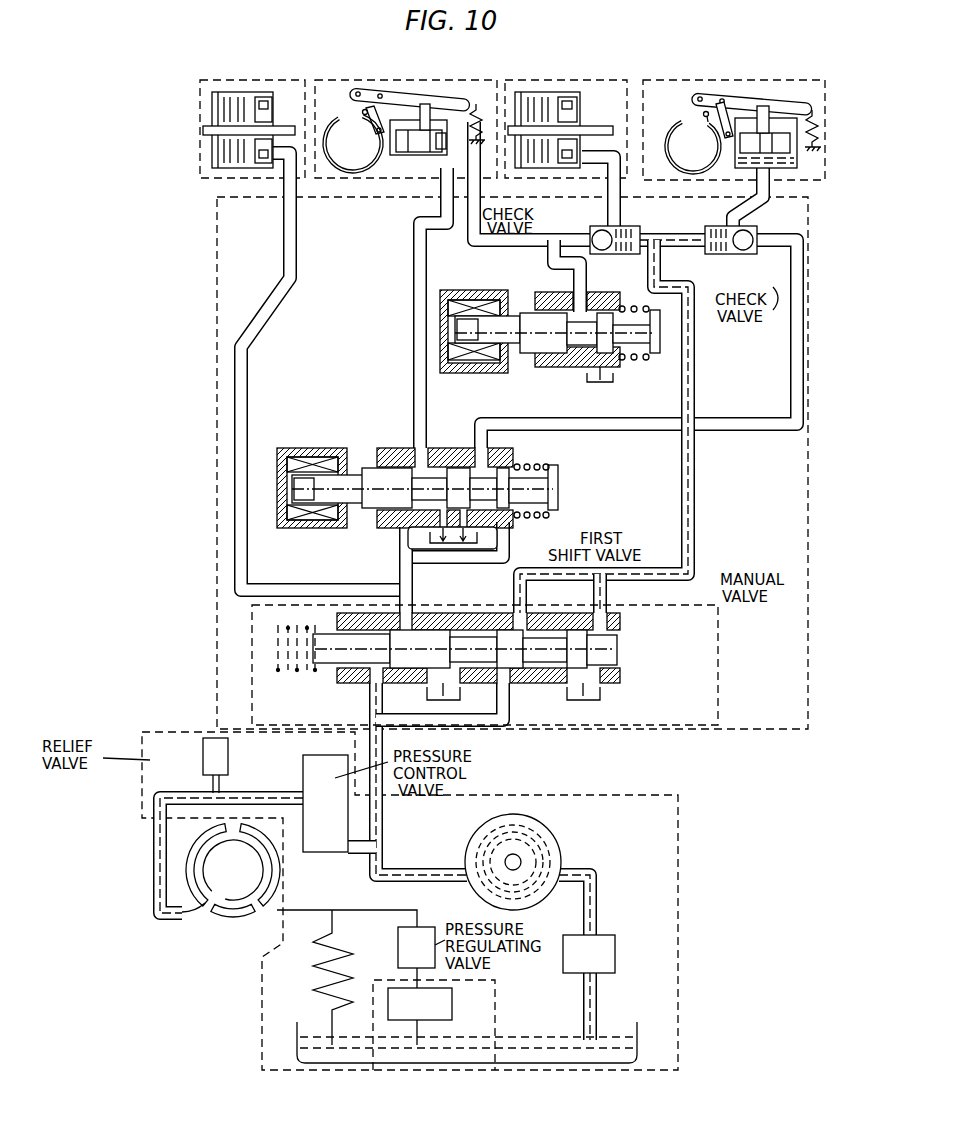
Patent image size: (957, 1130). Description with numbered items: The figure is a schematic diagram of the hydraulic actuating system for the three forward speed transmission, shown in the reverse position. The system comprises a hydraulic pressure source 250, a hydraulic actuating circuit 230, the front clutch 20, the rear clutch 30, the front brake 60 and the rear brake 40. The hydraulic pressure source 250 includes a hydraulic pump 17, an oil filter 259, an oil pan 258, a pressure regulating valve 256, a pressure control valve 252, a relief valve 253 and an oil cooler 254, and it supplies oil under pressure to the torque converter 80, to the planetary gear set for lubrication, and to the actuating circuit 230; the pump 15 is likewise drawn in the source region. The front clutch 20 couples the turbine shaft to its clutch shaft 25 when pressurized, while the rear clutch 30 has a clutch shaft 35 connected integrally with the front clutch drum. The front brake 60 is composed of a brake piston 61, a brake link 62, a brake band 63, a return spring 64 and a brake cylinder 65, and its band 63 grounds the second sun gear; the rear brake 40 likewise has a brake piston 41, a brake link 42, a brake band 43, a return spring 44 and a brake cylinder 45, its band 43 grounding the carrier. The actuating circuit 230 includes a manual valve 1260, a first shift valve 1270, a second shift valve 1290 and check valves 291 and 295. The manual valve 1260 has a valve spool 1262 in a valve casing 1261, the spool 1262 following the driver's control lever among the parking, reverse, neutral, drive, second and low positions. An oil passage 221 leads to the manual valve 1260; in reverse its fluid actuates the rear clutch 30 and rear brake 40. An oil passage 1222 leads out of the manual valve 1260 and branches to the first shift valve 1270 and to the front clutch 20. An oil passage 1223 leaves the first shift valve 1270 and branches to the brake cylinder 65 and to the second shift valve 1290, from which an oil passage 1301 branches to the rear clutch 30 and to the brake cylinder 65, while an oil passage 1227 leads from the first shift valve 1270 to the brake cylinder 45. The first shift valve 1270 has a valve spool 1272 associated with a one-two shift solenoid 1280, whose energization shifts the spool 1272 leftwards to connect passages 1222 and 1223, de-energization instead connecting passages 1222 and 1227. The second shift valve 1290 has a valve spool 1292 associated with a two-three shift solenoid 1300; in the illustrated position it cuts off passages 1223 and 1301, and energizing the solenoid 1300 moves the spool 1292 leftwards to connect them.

The pump 15 is at (222, 909).
The hydraulic pump 17 is at (548, 838).
The front clutch 20 is at (197, 140).
The clutch shaft 25 is at (258, 98).
The rear clutch 30 is at (558, 85).
The clutch shaft 35 is at (572, 116).
The rear brake 40 is at (737, 116).
The brake piston 41 is at (787, 152).
The brake link 42 is at (730, 96).
The brake band 43 is at (672, 133).
The return spring 44 is at (812, 106).
The brake cylinder 45 is at (740, 156).
The front brake 60 is at (409, 136).
The brake piston 61 is at (400, 158).
The brake link 62 is at (420, 90).
The brake band 63 is at (335, 165).
The return spring 64 is at (484, 108).
The brake cylinder 65 is at (417, 156).
The torque converter 80 is at (205, 913).
The oil passage 221 is at (367, 723).
The hydraulic actuating circuit 230 is at (216, 352).
The hydraulic pressure source 250 is at (147, 730).
The pressure control valve 252 is at (306, 776).
The relief valve 253 is at (203, 762).
The oil cooler 254 is at (313, 968).
The pressure regulating valve 256 is at (406, 943).
The oil pan 258 is at (633, 1025).
The oil filter 259 is at (603, 943).
The check valve 291 is at (588, 232).
The check valve 295 is at (745, 251).
The oil passage 1222 is at (407, 583).
The oil passage 1223 is at (414, 418).
The oil passage 1227 is at (577, 433).
The manual valve 1260 is at (524, 663).
The valve casing 1261 is at (536, 680).
The valve spool 1262 is at (603, 655).
The first shift valve 1270 is at (515, 522).
The valve spool 1272 is at (542, 490).
The 1-2 shift solenoid 1280 is at (305, 447).
The second shift valve 1290 is at (615, 367).
The valve spool 1292 is at (662, 345).
The 2-3 shift solenoid 1300 is at (475, 294).
The oil passage 1301 is at (583, 280).